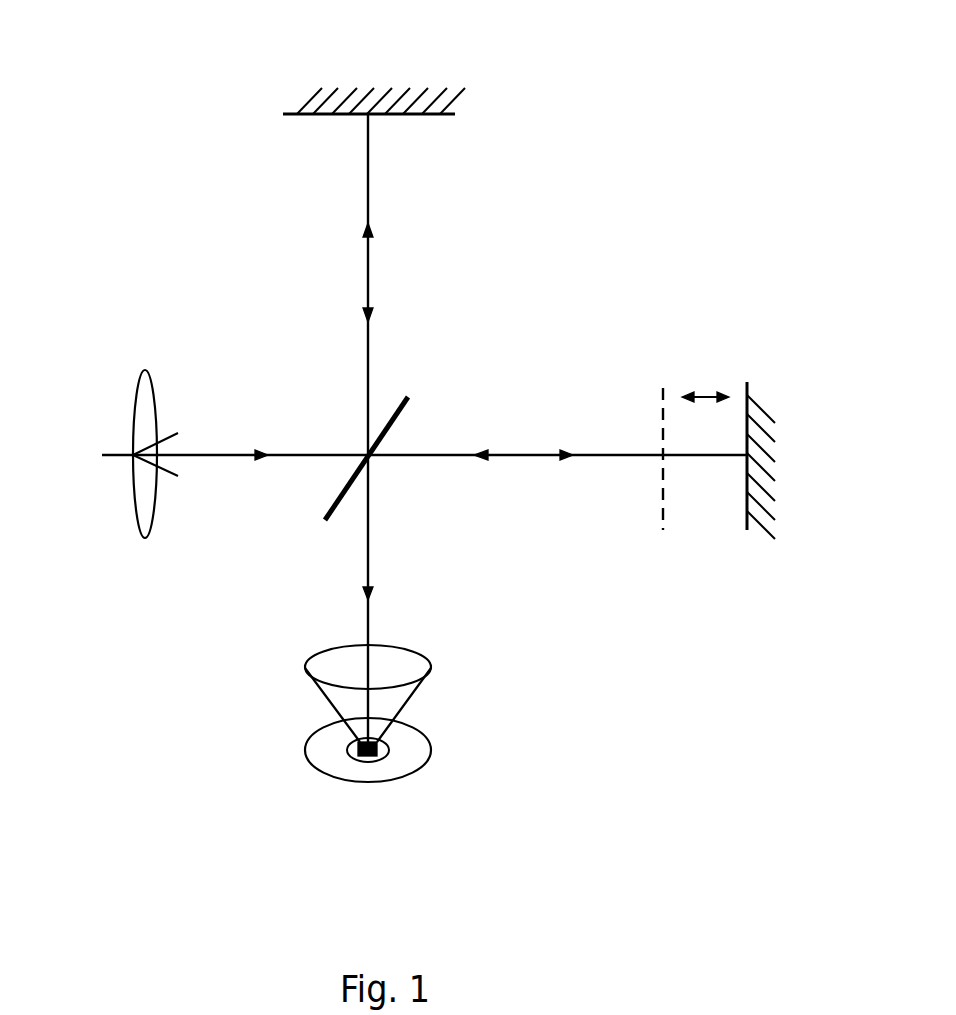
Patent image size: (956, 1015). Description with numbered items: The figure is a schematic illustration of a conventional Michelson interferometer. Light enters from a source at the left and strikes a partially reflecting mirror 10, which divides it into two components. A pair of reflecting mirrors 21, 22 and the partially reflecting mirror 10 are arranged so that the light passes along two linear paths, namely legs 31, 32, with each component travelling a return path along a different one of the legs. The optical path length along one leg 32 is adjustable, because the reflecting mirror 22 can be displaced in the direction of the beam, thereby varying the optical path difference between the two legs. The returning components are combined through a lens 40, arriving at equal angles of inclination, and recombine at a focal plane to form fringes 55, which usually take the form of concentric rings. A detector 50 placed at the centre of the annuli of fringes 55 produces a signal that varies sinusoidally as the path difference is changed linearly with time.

The partially reflecting mirror 10 is at (398, 409).
The reflecting mirror 21 is at (418, 106).
The reflecting mirror 22 is at (745, 506).
The leg 31 is at (368, 258).
The leg 32 is at (509, 456).
The lens 40 is at (307, 663).
The detector 50 is at (352, 749).
The fringes 55 is at (421, 767).